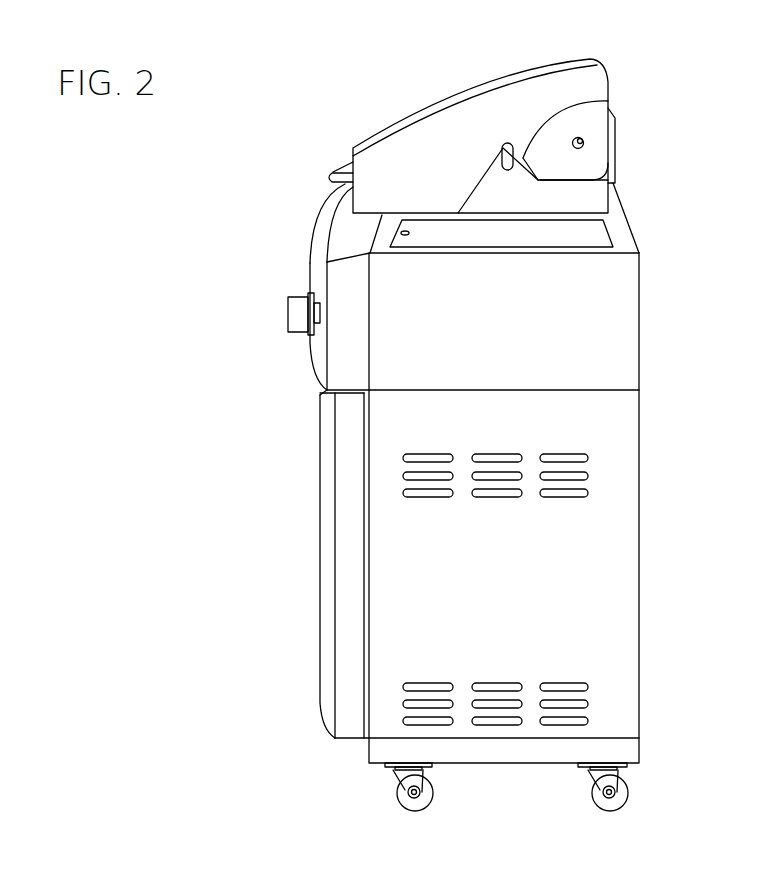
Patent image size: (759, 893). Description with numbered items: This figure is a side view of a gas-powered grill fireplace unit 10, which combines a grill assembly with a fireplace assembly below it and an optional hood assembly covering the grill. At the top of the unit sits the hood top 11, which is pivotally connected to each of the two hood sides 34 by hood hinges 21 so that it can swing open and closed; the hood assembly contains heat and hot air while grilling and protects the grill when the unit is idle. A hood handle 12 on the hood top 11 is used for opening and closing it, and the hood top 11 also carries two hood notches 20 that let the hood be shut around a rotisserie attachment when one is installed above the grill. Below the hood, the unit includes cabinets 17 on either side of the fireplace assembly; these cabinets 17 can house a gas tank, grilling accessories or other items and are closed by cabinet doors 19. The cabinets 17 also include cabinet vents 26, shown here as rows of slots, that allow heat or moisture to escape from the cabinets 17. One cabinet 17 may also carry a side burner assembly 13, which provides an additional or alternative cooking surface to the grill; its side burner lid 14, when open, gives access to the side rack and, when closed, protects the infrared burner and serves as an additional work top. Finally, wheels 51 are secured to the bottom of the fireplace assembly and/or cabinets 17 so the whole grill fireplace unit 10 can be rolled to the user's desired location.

The grill fireplace unit 10 is at (333, 63).
The hood top 11 is at (478, 78).
The hood handle 12 is at (325, 176).
The side burner assembly 13 is at (616, 231).
The side burner lid 14 is at (565, 235).
The cabinets 17 is at (623, 602).
The cabinet doors 19 is at (325, 531).
The hood notches 20 is at (608, 101).
The hood hinges 21 is at (587, 143).
The cabinet vents 26 is at (587, 474).
The hood sides 34 is at (587, 195).
The wheels 51 is at (630, 790).